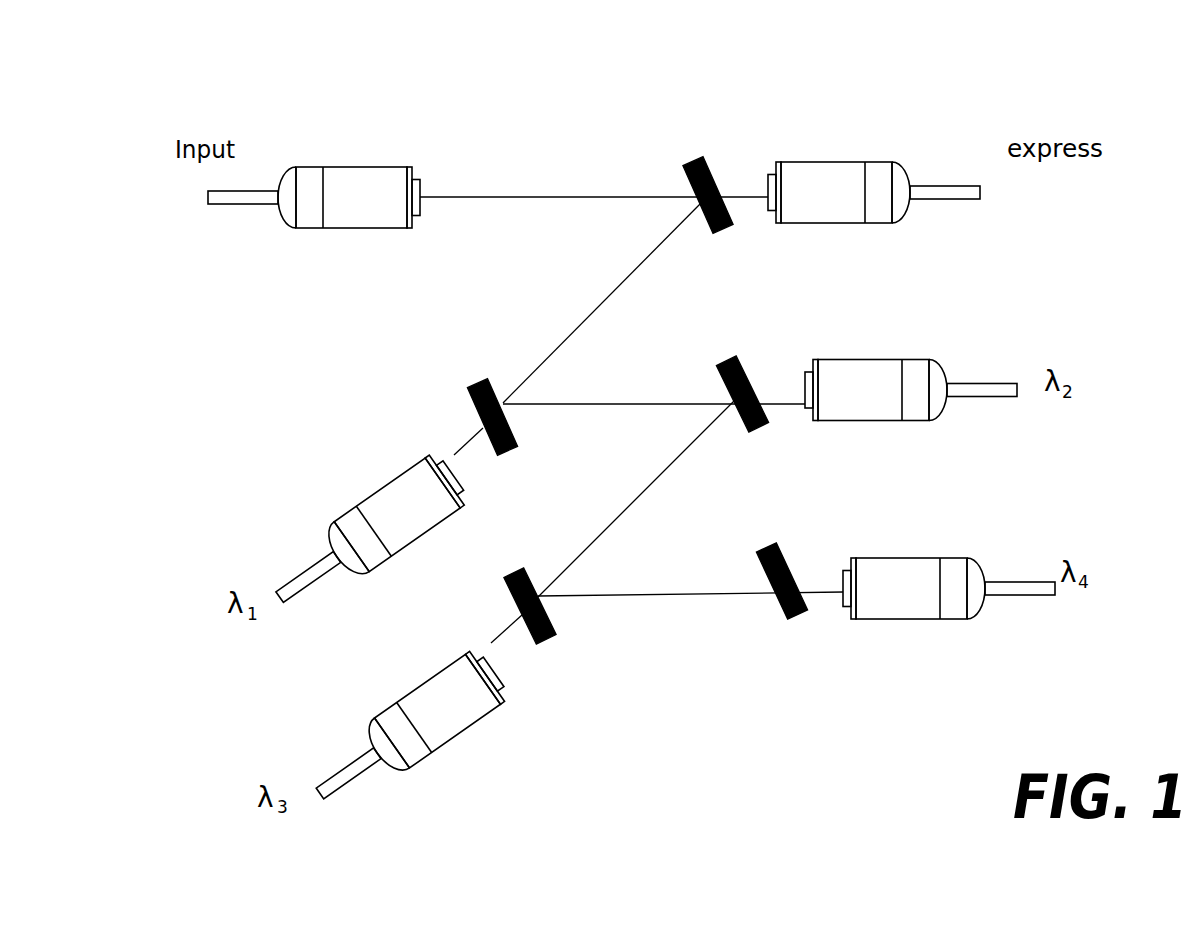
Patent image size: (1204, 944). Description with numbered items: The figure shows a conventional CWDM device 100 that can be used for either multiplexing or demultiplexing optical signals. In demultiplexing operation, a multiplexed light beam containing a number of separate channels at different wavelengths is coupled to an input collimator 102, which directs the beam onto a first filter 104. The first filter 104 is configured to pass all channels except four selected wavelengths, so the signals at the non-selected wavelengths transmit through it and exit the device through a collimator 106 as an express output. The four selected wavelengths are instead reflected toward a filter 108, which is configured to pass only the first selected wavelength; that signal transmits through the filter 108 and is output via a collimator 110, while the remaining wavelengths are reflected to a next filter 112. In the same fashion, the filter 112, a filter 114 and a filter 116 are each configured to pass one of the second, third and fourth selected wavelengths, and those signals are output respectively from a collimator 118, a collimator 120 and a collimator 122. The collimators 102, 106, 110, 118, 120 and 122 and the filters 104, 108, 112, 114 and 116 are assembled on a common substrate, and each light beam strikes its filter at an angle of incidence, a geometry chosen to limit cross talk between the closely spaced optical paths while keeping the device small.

The CWDM device 100 is at (699, 346).
The input collimator 102 is at (362, 164).
The first filter 104 is at (701, 197).
The collimator 106 is at (812, 159).
The filter 108 is at (488, 415).
The collimator 110 is at (372, 496).
The filter 112 is at (739, 398).
The filter 114 is at (543, 623).
The filter 116 is at (781, 589).
The collimator 118 is at (867, 361).
The collimator 120 is at (418, 686).
The collimator 122 is at (910, 559).